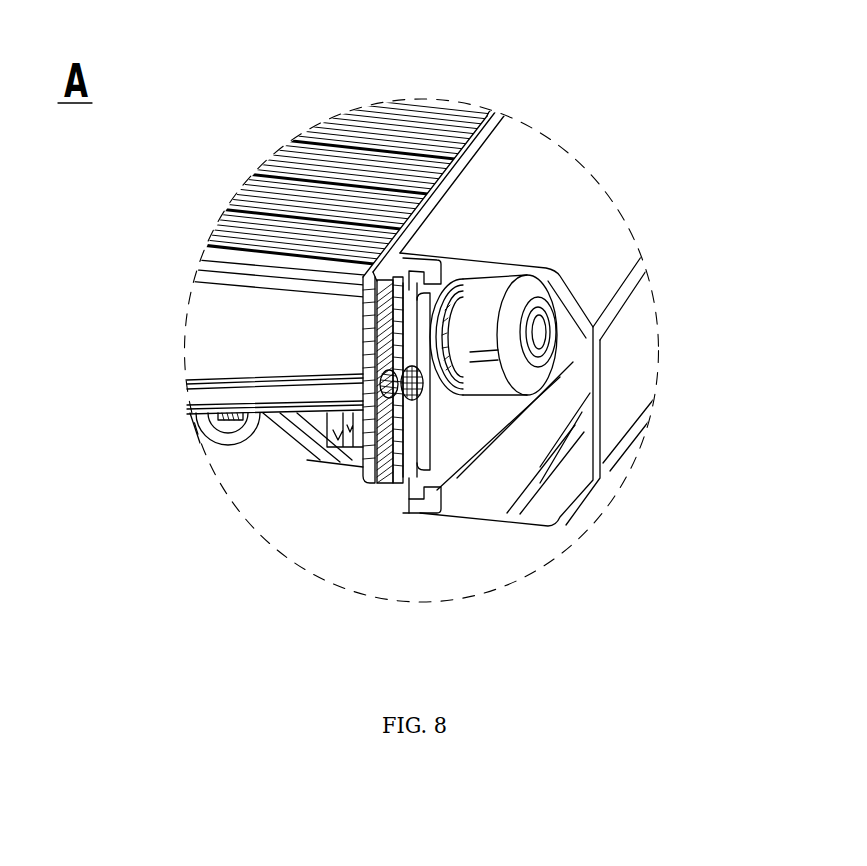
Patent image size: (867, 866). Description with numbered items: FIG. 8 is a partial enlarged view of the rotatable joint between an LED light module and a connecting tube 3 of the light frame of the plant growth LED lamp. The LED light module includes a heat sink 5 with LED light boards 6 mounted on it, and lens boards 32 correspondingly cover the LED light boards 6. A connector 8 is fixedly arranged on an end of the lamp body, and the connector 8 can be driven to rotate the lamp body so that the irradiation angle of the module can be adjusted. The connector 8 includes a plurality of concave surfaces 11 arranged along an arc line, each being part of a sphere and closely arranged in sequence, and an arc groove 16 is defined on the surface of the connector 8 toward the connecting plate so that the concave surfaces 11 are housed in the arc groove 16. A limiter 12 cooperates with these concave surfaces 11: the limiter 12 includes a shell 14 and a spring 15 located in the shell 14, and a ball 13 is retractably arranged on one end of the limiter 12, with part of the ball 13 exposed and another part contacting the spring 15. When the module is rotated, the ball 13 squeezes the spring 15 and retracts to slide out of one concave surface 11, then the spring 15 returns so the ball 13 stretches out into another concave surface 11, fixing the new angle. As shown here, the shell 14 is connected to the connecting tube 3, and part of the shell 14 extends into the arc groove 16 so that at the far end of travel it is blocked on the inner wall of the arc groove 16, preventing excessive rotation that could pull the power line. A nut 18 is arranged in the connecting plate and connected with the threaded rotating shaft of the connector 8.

The connecting tube 3 is at (462, 353).
The heat sink 5 is at (335, 164).
The LED light board 6 is at (272, 515).
The connector 8 is at (392, 455).
The concave surface 11 is at (243, 366).
The limiter 12 is at (562, 424).
The ball 13 is at (250, 377).
The shell 14 is at (247, 381).
The spring 15 is at (486, 559).
The arc groove 16 is at (317, 204).
The nut 18 is at (579, 335).
The lens board 32 is at (184, 468).